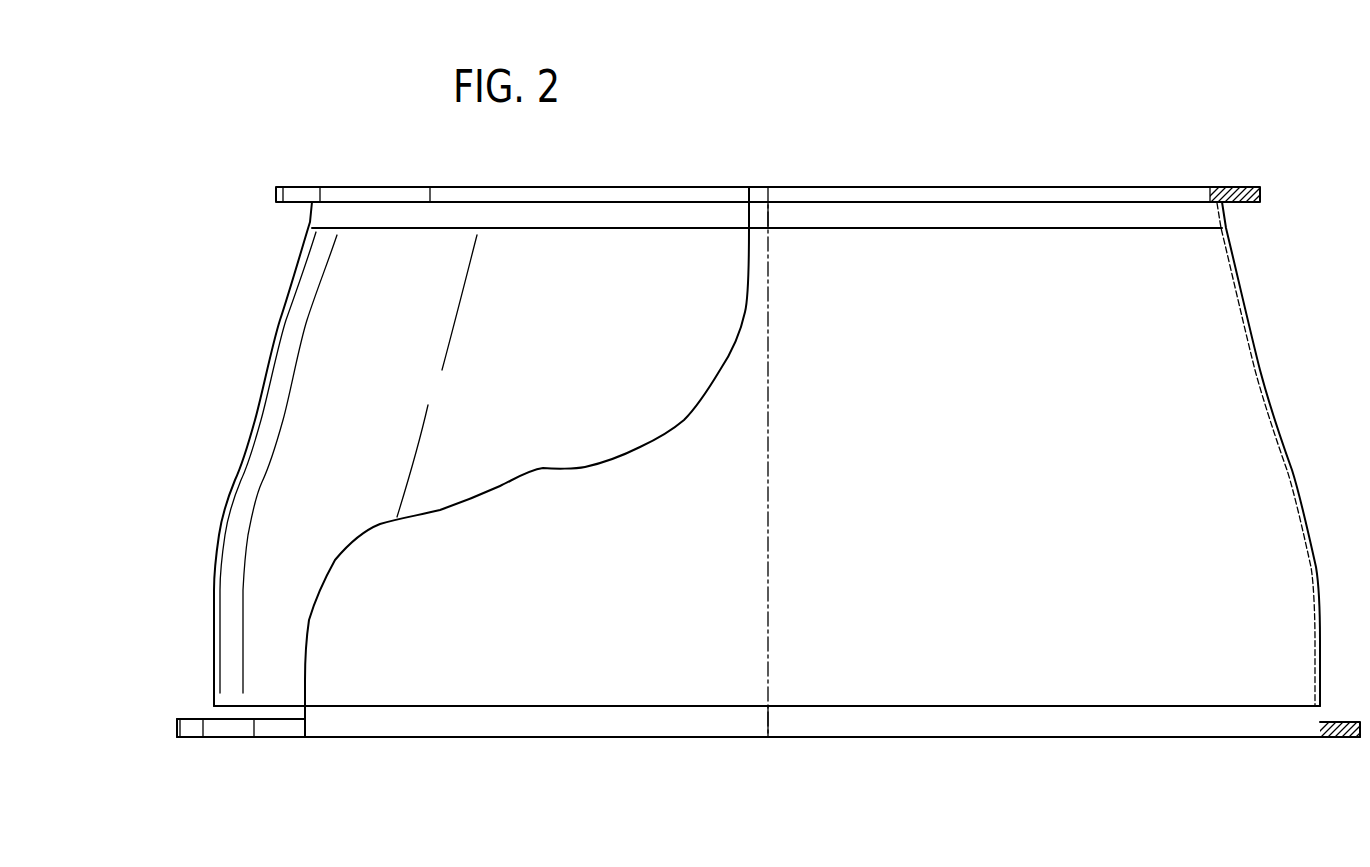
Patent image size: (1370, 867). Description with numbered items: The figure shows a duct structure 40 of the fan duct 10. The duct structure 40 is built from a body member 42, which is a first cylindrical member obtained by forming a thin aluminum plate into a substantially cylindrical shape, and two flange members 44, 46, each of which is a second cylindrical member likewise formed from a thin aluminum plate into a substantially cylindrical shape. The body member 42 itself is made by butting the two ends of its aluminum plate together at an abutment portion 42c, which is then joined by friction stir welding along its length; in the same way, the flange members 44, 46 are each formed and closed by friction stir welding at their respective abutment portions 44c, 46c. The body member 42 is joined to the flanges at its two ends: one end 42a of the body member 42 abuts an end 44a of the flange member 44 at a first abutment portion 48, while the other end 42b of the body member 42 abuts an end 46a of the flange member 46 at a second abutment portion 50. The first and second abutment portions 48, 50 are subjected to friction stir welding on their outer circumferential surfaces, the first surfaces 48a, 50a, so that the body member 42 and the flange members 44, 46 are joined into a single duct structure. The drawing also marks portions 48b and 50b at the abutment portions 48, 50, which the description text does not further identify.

The fan duct 10 is at (837, 112).
The duct structure 40 is at (1299, 296).
The body member 42 is at (1275, 388).
The end of the body member 42a is at (1016, 704).
The end of the body member 42b is at (1012, 230).
The abutment portion 42c is at (770, 357).
The flange member 44 is at (1231, 725).
The end of the flange member 44a is at (958, 706).
The abutment portion 44c is at (770, 717).
The flange member 46 is at (1000, 187).
The end of the flange member 46a is at (962, 228).
The abutment portion 46c is at (770, 213).
The first abutment portion 48 is at (1027, 653).
The outer circumferential surface 48a is at (1147, 708).
The lower joint inner part 48b is at (1158, 706).
The second abutment portion 50 is at (1027, 281).
The outer circumferential surface 50a is at (1097, 228).
The upper joint inner part 50b is at (1108, 231).